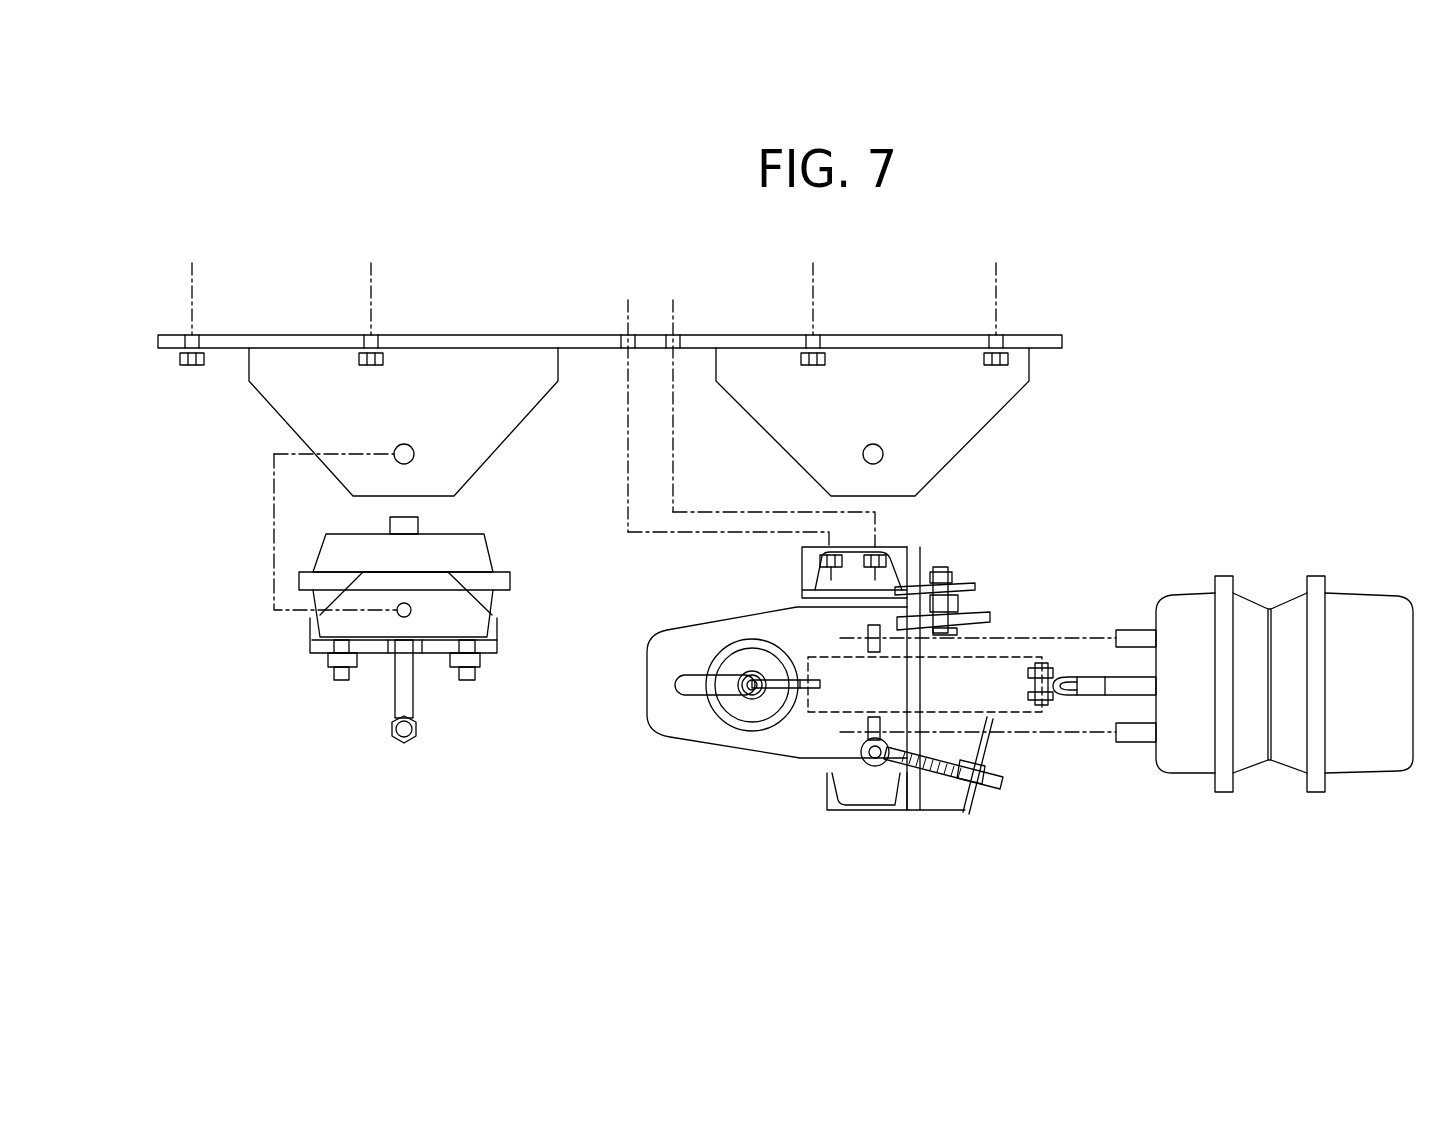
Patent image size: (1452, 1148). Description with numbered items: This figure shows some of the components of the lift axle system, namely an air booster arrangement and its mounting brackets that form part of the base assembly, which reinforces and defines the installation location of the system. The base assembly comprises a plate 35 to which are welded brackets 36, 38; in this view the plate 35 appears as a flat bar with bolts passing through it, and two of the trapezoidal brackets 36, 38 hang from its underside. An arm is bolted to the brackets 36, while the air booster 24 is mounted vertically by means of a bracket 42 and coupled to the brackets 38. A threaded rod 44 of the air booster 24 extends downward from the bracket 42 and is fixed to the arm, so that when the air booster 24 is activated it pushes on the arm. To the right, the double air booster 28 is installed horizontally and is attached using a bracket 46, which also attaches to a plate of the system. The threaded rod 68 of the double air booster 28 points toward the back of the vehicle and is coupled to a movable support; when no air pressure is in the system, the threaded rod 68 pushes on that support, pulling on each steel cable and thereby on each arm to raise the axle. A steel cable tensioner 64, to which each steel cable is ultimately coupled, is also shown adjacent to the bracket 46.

The air booster 24 is at (478, 550).
The double air booster 28 is at (1227, 787).
The plate 35 is at (1050, 350).
The brackets 36 is at (950, 440).
The brackets 38 is at (508, 420).
The bracket 42 is at (477, 622).
The threaded rod 44 is at (407, 678).
The bracket 46 is at (772, 747).
The steel cable tensioner 64 is at (1003, 777).
The threaded rod 68 is at (1092, 685).